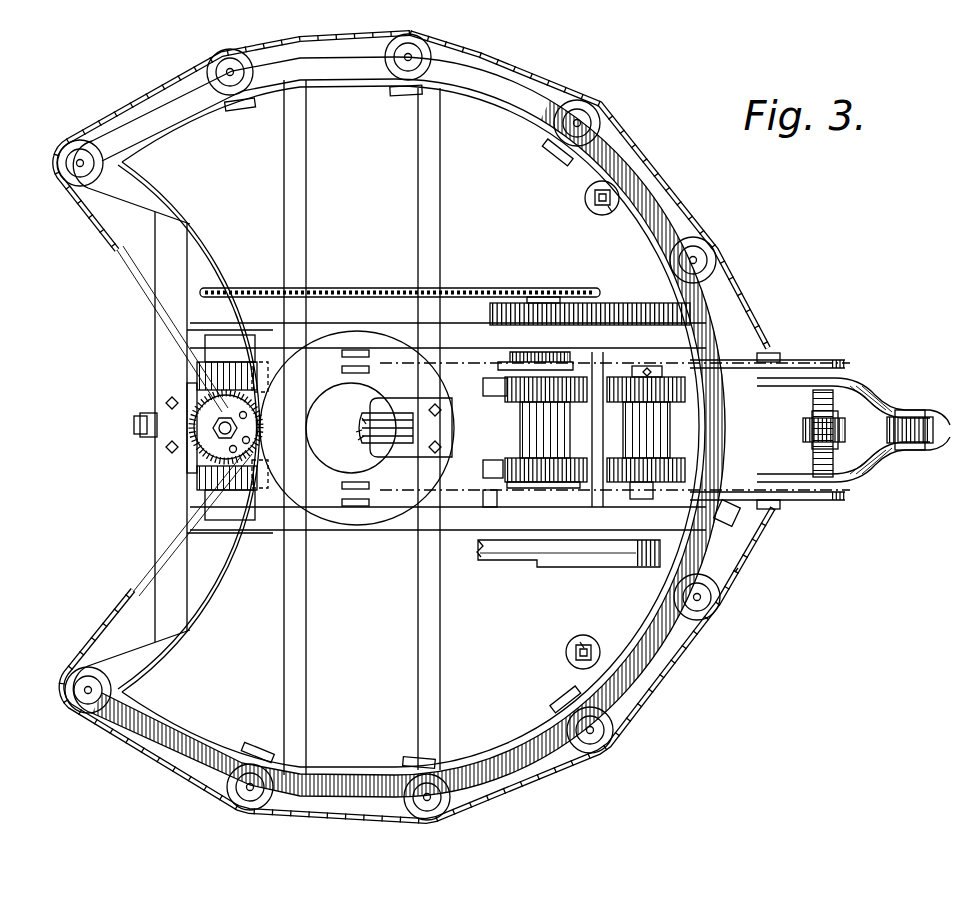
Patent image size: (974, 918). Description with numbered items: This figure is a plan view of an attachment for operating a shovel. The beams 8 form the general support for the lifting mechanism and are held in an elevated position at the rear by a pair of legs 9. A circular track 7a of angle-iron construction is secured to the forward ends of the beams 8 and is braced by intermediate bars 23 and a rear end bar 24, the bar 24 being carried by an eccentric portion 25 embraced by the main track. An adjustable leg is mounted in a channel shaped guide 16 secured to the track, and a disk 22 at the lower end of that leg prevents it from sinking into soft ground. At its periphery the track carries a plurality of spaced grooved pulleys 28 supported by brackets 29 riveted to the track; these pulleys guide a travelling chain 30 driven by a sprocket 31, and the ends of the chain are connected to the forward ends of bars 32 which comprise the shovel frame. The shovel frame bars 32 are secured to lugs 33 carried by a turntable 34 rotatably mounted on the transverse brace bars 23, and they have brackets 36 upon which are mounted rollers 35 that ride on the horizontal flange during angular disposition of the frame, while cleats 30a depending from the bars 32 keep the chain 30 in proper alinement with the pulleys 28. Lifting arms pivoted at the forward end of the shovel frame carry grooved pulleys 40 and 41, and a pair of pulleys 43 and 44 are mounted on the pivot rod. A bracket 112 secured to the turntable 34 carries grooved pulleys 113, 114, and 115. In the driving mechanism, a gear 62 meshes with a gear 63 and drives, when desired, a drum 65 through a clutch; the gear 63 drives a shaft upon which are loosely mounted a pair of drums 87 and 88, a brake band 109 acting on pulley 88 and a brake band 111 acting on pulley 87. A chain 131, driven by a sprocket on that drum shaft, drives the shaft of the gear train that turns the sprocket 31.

The circular track 7a is at (487, 748).
The beams 8 is at (406, 334).
The legs 9 is at (596, 440).
The channel shaped guide 16 is at (598, 208).
The disk 22 is at (612, 212).
The intermediate bars 23 is at (302, 676).
The rear end bar 24 is at (156, 352).
The eccentric portion 25 is at (212, 246).
The grooved pulleys 28 is at (230, 50).
The brackets 29 is at (242, 110).
The travelling chain 30 is at (116, 246).
The cleats 30a is at (780, 358).
The sprocket 31 is at (240, 445).
The bars 32 is at (412, 364).
The lugs 33 is at (342, 370).
The turntable 34 is at (358, 430).
The rollers 35 is at (728, 524).
The brackets 36 is at (738, 568).
The grooved pulley 40 is at (932, 455).
The grooved pulley 41 is at (930, 418).
The pulley 43 is at (846, 430).
The pulley 44 is at (846, 440).
The gear 62 is at (622, 306).
The gear 63 is at (568, 304).
The drum 65 is at (666, 442).
The drum 87 is at (540, 444).
The drum 88 is at (535, 418).
The brake band 109 is at (500, 388).
The brake band 111 is at (508, 470).
The bracket 112 is at (392, 450).
The grooved pulley 113 is at (362, 418).
The grooved pulley 114 is at (356, 432).
The grooved pulley 115 is at (358, 440).
The chain 131 is at (340, 288).